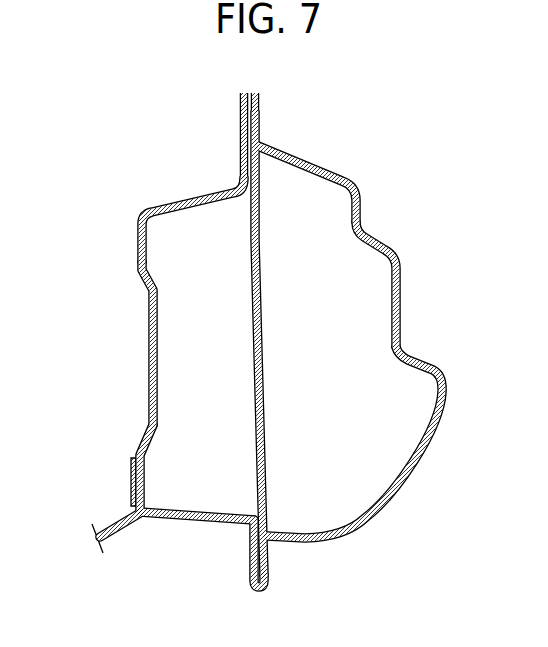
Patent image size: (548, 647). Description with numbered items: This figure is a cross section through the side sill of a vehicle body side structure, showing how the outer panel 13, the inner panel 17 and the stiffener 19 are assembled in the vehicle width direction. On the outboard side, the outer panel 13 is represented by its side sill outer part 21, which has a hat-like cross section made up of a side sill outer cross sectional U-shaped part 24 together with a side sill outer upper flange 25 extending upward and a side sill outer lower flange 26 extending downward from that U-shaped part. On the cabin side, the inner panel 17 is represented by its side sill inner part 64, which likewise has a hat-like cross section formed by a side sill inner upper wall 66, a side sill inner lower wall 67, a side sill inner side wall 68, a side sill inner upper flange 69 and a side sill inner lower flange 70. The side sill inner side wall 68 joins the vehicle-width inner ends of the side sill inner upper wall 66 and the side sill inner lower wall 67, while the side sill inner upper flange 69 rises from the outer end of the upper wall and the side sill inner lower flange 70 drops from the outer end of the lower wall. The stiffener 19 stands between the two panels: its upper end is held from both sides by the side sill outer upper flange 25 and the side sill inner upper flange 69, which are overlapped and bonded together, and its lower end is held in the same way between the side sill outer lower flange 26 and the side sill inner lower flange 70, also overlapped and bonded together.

The outer panel 13 is at (412, 313).
The inner panel 17 is at (138, 384).
The stiffener 19 is at (240, 247).
The side sill outer part 21 is at (323, 162).
The side sill outer cross sectional U-shaped part 24 is at (393, 240).
The side sill outer upper flange 25 is at (260, 110).
The side sill outer lower flange 26 is at (272, 563).
The side sill inner part 64 is at (135, 445).
The side sill inner upper wall 66 is at (173, 199).
The side sill inner lower wall 67 is at (168, 520).
The side sill inner side wall 68 is at (148, 333).
The side sill inner upper flange 69 is at (242, 113).
The side sill inner lower flange 70 is at (250, 559).